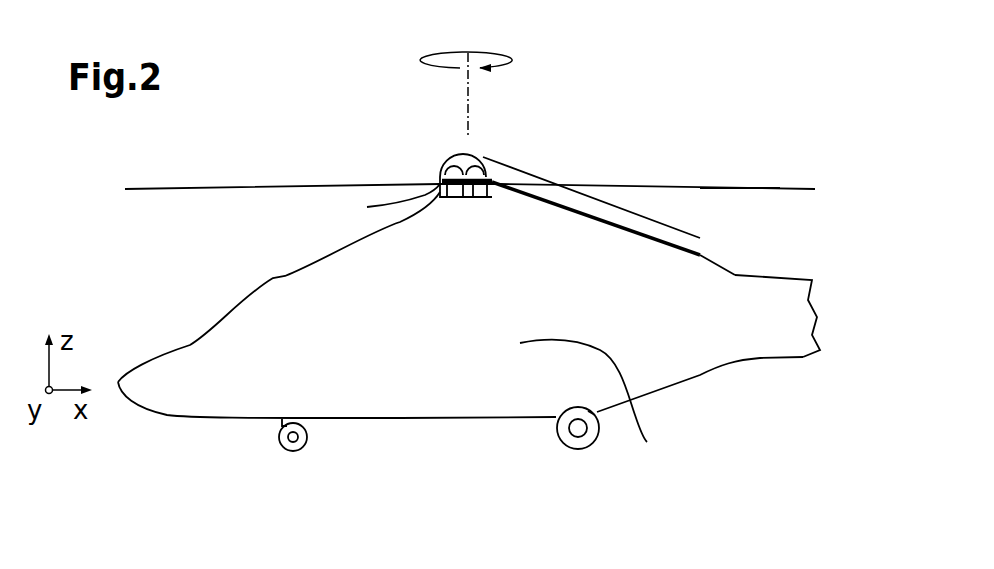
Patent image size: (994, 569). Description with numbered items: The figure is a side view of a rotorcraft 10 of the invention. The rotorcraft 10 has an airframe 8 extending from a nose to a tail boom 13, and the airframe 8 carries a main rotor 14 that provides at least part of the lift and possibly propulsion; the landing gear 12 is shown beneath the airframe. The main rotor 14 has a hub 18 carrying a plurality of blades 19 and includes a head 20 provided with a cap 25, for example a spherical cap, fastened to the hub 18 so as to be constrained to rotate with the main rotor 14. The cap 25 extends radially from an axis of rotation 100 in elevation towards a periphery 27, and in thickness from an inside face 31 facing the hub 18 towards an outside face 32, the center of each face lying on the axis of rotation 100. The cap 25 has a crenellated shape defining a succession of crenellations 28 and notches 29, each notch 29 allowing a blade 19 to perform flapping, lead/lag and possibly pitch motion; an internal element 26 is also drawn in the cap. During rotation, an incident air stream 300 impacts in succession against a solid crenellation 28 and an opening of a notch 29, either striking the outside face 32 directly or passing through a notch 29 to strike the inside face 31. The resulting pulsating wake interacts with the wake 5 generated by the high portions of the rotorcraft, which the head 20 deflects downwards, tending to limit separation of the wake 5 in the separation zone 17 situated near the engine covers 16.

The wake 5 is at (652, 226).
The airframe 8 is at (593, 397).
The rotorcraft 10 is at (398, 447).
The landing gear 12 is at (500, 420).
The tail boom 13 is at (797, 359).
The main rotor 14 is at (740, 168).
The engine covers 16 is at (504, 189).
The separation zone 17 is at (577, 224).
The hub 18 is at (447, 197).
The blades 19 is at (236, 192).
The head 20 is at (454, 173).
The cap 25 is at (447, 147).
The hub inner element 26 is at (467, 145).
The periphery 27 is at (386, 202).
The crenellations 28 is at (485, 156).
The notches 29 is at (482, 197).
The inside face 31 is at (495, 197).
The outside face 32 is at (437, 175).
The axis of rotation in elevation 100 is at (468, 110).
The incident air stream 300 is at (390, 165).